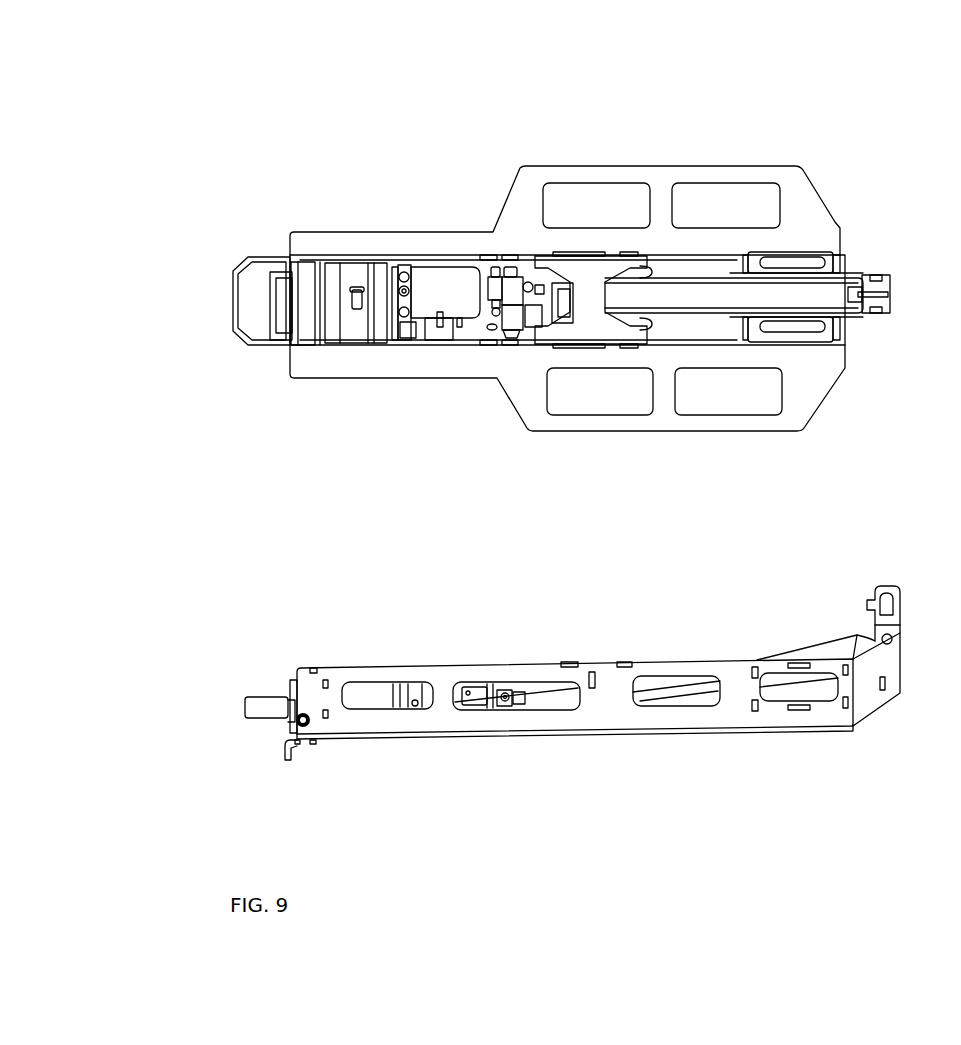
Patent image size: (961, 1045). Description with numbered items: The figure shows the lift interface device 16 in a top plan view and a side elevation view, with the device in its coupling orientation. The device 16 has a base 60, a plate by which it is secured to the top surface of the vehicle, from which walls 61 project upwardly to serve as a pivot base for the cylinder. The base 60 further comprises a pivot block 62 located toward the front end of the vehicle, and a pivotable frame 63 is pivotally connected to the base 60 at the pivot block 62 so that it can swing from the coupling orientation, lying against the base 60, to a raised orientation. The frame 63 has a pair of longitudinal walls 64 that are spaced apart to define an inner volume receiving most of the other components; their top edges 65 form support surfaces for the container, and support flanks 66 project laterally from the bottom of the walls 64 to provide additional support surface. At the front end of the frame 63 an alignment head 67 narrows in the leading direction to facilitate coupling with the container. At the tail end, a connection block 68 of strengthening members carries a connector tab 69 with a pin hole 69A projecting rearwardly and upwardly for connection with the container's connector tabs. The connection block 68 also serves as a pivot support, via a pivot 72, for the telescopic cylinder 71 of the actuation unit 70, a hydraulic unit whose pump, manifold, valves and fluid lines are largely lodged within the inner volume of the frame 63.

The lift interface device 16 is at (413, 134).
The base 60 is at (680, 273).
The walls 61 is at (450, 258).
The pivot block 62 is at (291, 267).
The pivotable frame 63 is at (824, 216).
The longitudinal walls 64 is at (517, 253).
The top edges 65 is at (655, 254).
The support flanks 66 is at (783, 168).
The alignment head 67 is at (242, 347).
The connection block 68 is at (832, 262).
The connector tab 69 is at (887, 292).
The pin hole 69A is at (887, 607).
The actuation unit 70 is at (424, 254).
The cylinder 71 is at (685, 348).
The pivot 72 is at (893, 640).